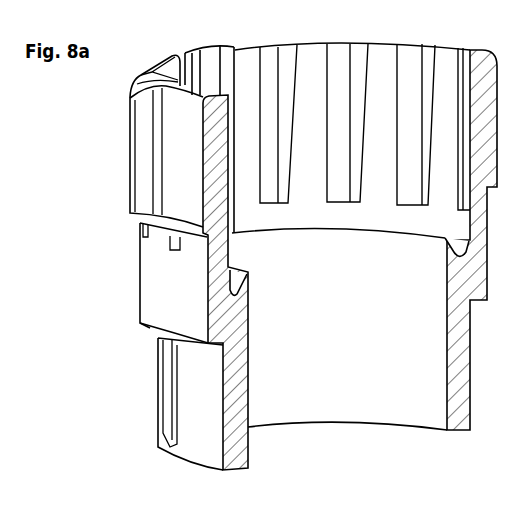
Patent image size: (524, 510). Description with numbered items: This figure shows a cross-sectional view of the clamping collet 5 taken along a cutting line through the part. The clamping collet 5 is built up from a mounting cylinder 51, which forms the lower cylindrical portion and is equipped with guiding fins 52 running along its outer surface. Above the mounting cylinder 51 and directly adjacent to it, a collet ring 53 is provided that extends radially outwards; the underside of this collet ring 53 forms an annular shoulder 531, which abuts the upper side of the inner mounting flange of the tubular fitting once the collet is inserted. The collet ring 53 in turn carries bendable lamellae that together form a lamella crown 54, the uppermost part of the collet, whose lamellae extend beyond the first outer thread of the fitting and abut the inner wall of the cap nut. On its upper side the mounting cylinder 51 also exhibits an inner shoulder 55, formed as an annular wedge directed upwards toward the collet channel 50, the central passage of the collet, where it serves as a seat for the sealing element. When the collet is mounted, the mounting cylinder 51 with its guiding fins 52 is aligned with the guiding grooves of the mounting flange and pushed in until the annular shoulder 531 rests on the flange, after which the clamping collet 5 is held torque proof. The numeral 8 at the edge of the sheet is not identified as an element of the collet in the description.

The clamping collet 5 is at (260, 272).
The collet channel 50 is at (337, 337).
The mounting cylinder 51 is at (197, 425).
The guiding fins 52 is at (163, 382).
The collet ring 53 is at (148, 277).
The annular shoulder 531 is at (143, 327).
The lamella crown 54 is at (128, 180).
The inner shoulder 55 is at (443, 243).
The clipped numeral at sheet edge 8 is at (4, 201).